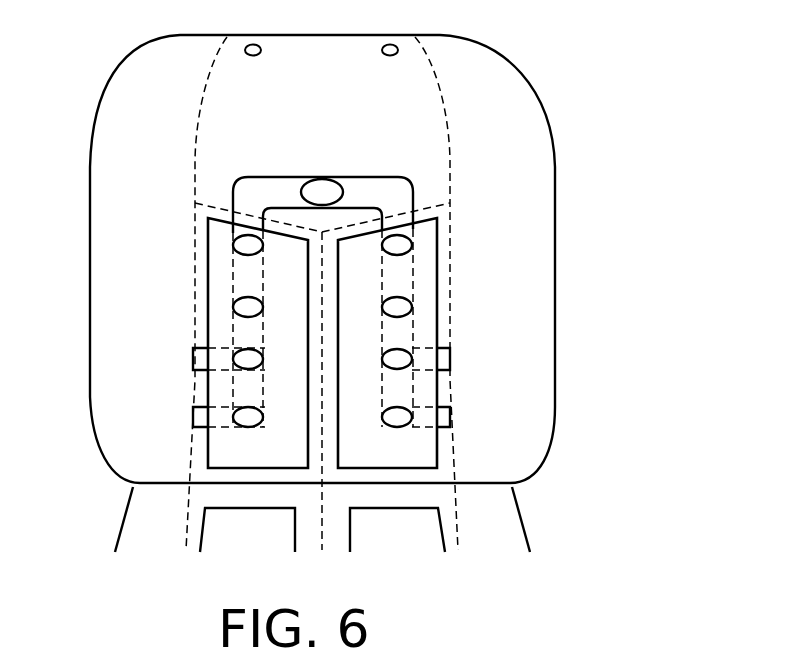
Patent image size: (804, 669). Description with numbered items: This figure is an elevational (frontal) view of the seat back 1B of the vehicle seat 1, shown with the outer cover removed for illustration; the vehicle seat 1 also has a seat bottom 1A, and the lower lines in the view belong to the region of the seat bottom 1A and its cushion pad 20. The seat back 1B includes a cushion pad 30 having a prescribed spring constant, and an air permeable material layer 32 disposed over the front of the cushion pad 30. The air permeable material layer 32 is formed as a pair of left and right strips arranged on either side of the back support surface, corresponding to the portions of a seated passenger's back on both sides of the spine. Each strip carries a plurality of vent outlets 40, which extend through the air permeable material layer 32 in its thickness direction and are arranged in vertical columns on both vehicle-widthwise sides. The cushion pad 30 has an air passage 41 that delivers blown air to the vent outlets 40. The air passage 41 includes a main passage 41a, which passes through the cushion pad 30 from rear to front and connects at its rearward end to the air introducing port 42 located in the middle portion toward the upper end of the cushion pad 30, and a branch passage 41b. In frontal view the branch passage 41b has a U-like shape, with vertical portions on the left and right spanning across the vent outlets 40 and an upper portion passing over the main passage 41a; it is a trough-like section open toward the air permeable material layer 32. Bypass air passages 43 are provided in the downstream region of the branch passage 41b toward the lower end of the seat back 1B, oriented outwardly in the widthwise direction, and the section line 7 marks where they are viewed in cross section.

The vehicle seat 1 is at (557, 106).
The seat bottom 1A is at (394, 527).
The seat back 1B is at (392, 292).
The cushion pad 20 is at (513, 538).
The cushion pad 30 is at (538, 183).
The air permeable material layer 32 is at (211, 252).
The vent outlets 40 is at (238, 250).
The air passage 41 is at (410, 98).
The main passage 41a is at (317, 181).
The branch passage 41b is at (262, 181).
The air introducing port 42 is at (338, 261).
The bypass air passages 43 is at (193, 362).
The section line VII 7 is at (168, 416).